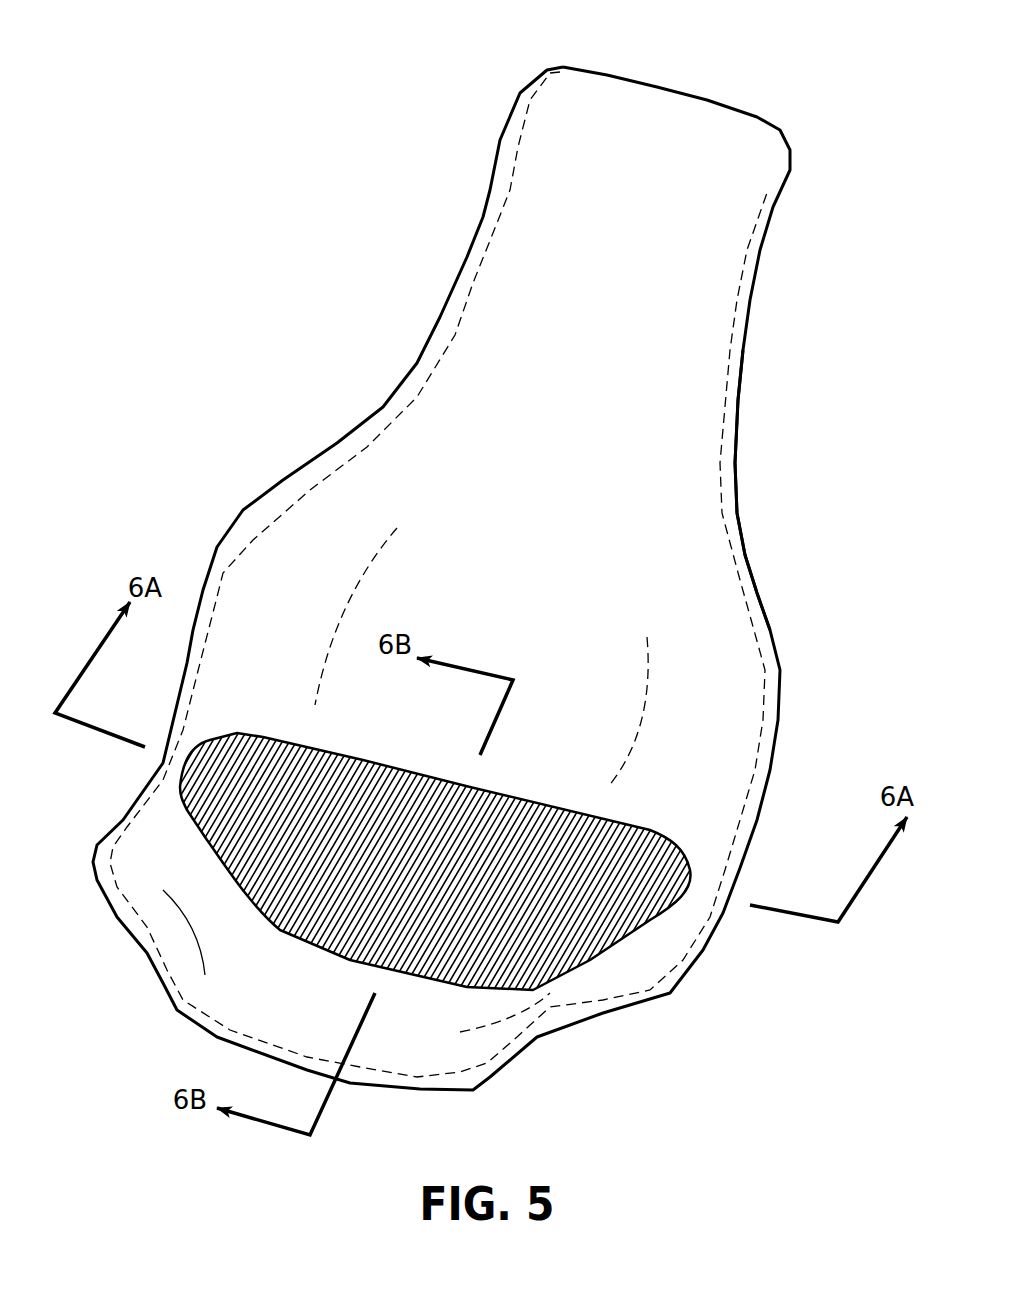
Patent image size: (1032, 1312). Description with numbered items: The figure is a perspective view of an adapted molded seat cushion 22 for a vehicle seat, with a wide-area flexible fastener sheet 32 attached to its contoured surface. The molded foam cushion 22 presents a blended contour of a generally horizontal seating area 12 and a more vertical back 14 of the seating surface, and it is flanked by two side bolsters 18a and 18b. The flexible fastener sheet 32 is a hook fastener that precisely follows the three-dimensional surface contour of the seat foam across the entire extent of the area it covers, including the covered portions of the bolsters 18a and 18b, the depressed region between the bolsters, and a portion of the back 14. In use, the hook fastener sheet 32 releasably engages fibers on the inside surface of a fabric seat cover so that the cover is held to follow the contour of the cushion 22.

The seating area 12 is at (80, 838).
The back 14 is at (383, 357).
The side bolster 18a is at (147, 955).
The side bolster 18b is at (603, 1017).
The molded seat cushion 22 is at (757, 593).
The flexible fastener sheet 32 is at (428, 777).